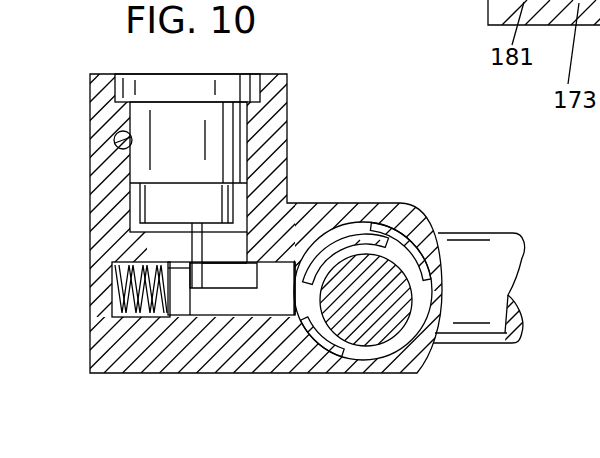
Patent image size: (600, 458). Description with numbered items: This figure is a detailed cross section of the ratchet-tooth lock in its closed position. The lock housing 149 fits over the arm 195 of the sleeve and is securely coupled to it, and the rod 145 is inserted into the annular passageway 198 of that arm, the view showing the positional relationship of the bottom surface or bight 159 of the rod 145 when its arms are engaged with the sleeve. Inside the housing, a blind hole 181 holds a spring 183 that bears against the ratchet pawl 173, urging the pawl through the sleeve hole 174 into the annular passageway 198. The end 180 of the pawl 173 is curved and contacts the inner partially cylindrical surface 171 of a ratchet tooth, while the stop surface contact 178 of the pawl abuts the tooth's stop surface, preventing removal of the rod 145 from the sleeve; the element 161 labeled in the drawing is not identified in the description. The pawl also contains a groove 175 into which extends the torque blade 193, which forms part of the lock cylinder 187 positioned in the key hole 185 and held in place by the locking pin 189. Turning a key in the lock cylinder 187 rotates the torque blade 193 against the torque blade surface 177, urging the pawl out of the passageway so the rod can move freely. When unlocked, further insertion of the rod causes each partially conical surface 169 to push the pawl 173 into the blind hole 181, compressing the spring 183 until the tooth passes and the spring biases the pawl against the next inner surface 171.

The rod 145 is at (502, 232).
The lock housing 149 is at (291, 82).
The bight 159 is at (497, 337).
The ball 161 is at (408, 277).
The partially conical surface 169 is at (363, 242).
The inner partially cylindrical surface 171 is at (392, 232).
The ratchet pawl 173 is at (181, 320).
The sleeve hole 174 is at (288, 304).
The groove 175 is at (225, 257).
The torque blade surface 177 is at (200, 268).
The stop surface contact 178 is at (330, 345).
The end of the pawl 180 is at (325, 301).
The blind hole 181 is at (143, 313).
The spring 183 is at (112, 278).
The key hole 185 is at (237, 198).
The lock cylinder 187 is at (228, 142).
The locking pin 189 is at (123, 131).
The torque blade 193 is at (118, 241).
The arm of sleeve 195 is at (385, 343).
The annular passageway 198 is at (436, 345).